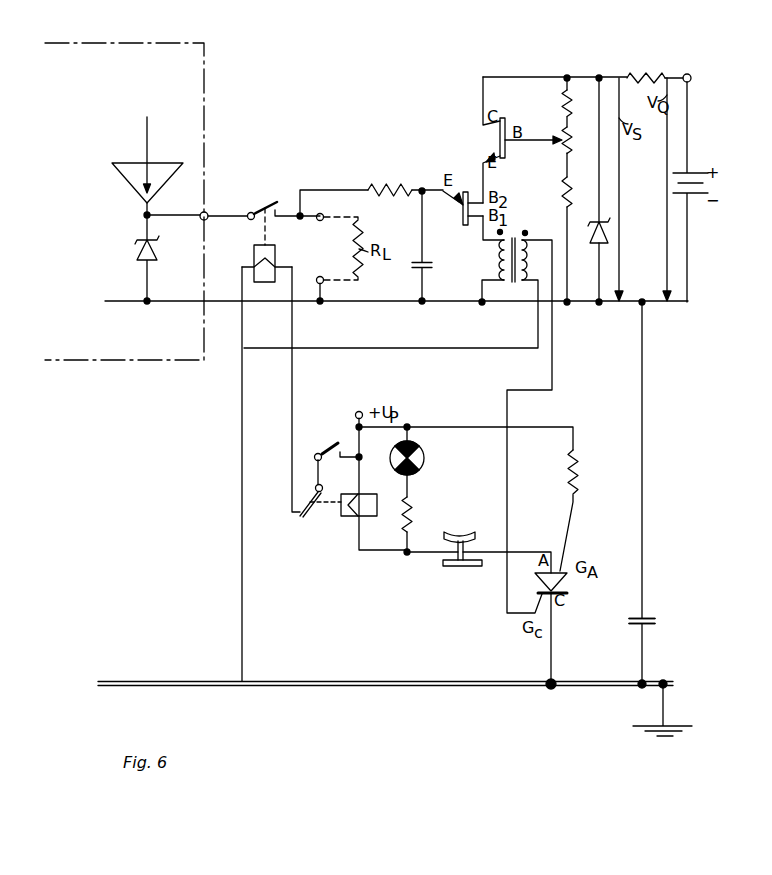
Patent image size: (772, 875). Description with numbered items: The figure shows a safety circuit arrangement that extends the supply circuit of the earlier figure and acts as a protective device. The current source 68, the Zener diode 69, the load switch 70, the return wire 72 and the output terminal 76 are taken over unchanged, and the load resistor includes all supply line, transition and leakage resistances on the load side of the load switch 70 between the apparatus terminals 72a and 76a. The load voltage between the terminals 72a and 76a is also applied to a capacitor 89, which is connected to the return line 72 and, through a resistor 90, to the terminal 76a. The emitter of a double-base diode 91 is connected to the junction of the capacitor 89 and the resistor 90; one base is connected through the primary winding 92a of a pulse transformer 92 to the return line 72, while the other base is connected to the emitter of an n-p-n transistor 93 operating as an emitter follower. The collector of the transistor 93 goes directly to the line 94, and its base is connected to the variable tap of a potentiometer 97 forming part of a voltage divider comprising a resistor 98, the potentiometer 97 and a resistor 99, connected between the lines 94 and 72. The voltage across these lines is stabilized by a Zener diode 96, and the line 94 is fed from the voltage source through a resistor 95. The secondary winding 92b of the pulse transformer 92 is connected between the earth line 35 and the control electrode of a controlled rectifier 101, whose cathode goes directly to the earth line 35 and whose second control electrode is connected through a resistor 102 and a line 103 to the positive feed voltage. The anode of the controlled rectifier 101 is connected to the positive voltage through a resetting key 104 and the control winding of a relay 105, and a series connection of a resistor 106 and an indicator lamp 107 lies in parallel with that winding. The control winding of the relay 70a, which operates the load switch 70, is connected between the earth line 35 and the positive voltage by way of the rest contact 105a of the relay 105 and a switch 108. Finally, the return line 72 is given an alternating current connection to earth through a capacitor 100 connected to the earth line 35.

The current source 68 is at (132, 180).
The Zener diode 69 is at (132, 255).
The output terminal 76 is at (205, 214).
The load switch 70 is at (266, 205).
The relay 70a is at (266, 282).
The return wire 72 is at (173, 302).
The apparatus terminal 76a is at (321, 221).
The apparatus terminal 72a is at (320, 277).
The resistor 90 is at (391, 188).
The capacitor 89 is at (424, 263).
The double-base diode 91 is at (464, 223).
The n-p-n transistor 93 is at (503, 121).
The line 94 is at (528, 78).
The resistor 98 is at (570, 105).
The potentiometer 97 is at (572, 142).
The resistor 99 is at (572, 197).
The Zener diode 96 is at (597, 248).
The resistor 95 is at (648, 78).
The pulse transformer 92 is at (515, 282).
The primary winding 92a is at (500, 263).
The secondary winding 92b is at (527, 261).
The line 103 is at (473, 428).
The switch 108 is at (338, 444).
The indicator lamp 107 is at (424, 458).
The resistor 106 is at (411, 506).
The resetting key 104 is at (460, 535).
The resistor 102 is at (578, 474).
The rest contact 105a is at (308, 513).
The relay 105 is at (350, 516).
The controlled rectifier 101 is at (569, 596).
The capacitor 100 is at (647, 619).
The earth line 35 is at (579, 684).